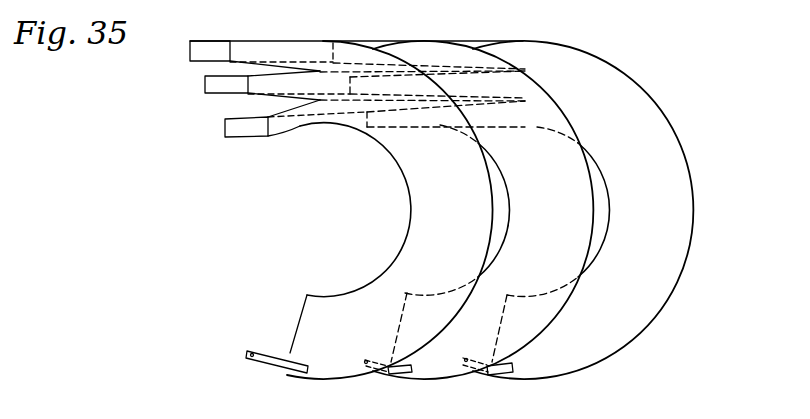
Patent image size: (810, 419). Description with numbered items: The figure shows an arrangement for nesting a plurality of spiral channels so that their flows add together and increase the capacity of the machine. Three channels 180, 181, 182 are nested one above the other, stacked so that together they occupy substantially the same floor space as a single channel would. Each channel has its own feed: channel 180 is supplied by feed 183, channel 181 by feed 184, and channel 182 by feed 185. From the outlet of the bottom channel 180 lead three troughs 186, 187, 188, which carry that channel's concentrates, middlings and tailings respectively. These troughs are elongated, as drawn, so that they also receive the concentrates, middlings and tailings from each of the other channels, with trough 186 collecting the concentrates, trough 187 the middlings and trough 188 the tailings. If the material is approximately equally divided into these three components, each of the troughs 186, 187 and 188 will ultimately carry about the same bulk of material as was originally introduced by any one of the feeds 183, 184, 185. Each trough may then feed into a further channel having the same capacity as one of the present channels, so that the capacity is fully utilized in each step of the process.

The channel 180 is at (673, 188).
The channel 181 is at (552, 203).
The channel 182 is at (423, 178).
The feed 183 is at (510, 356).
The feed 184 is at (402, 354).
The feed 185 is at (250, 357).
The trough 186 is at (237, 132).
The trough 187 is at (212, 89).
The trough 188 is at (195, 49).